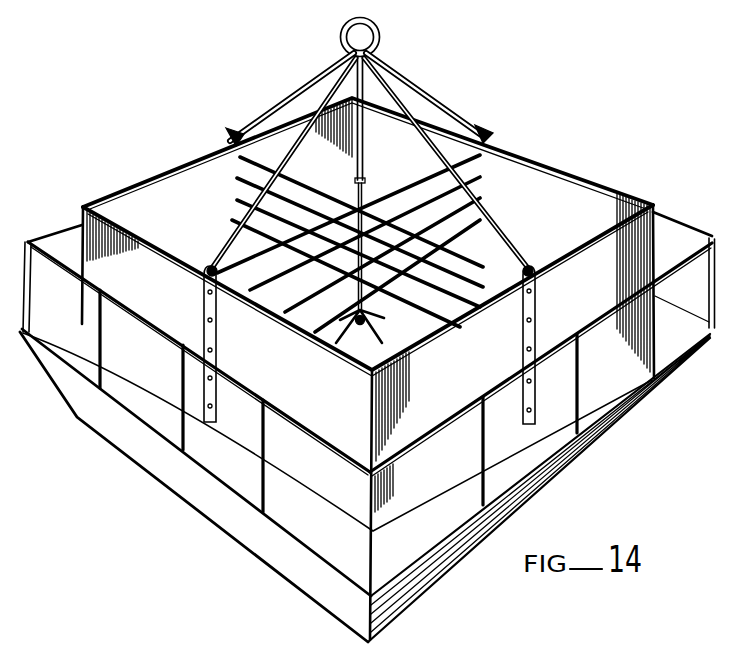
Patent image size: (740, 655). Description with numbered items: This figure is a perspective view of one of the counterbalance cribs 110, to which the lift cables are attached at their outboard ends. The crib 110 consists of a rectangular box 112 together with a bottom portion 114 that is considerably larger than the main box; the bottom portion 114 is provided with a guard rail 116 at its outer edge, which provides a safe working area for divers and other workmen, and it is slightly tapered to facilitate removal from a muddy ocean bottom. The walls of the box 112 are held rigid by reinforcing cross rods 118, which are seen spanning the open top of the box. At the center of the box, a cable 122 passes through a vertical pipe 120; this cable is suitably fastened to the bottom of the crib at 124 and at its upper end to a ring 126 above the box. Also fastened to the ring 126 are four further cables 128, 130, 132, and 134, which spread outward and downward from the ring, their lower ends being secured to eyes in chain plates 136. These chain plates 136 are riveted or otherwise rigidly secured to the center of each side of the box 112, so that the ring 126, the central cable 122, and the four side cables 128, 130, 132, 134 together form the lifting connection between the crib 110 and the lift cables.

The counterbalance crib 110 is at (367, 330).
The rectangular box 112 is at (300, 396).
The bottom portion 114 is at (175, 477).
The guard rail 116 is at (317, 450).
The reinforcing cross rods 118 is at (405, 222).
The vertical pipe 120 is at (352, 197).
The cable 122 is at (345, 88).
The fastening point at bottom of crib 124 is at (356, 325).
The ring 126 is at (380, 37).
The cable 128 is at (263, 110).
The cable 130 is at (435, 97).
The cable 132 is at (490, 217).
The cable 134 is at (230, 248).
The chain plates 136 is at (203, 325).